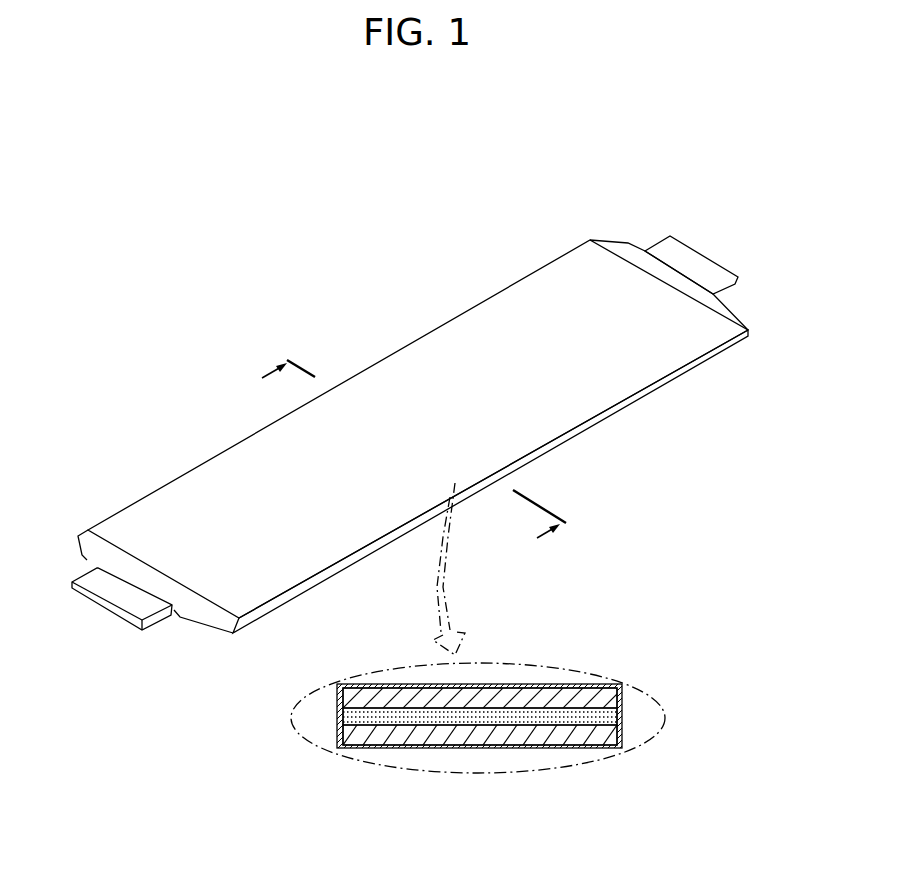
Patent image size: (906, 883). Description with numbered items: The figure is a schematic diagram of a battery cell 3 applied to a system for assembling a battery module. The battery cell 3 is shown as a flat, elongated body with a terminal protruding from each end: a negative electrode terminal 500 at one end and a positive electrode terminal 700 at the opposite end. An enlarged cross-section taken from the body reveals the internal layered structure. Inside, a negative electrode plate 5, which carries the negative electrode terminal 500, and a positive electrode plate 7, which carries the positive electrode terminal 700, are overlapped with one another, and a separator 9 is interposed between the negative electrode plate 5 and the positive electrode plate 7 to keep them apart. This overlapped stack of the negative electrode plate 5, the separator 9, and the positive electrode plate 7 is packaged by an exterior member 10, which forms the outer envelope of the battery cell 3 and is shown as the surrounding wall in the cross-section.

The battery cell 3 is at (234, 223).
The exterior member 10 is at (525, 290).
The negative electrode terminal 500 is at (662, 248).
The positive electrode terminal 700 is at (120, 597).
The negative electrode plate 5 is at (552, 700).
The positive electrode plate 7 is at (447, 737).
The separator 9 is at (492, 717).